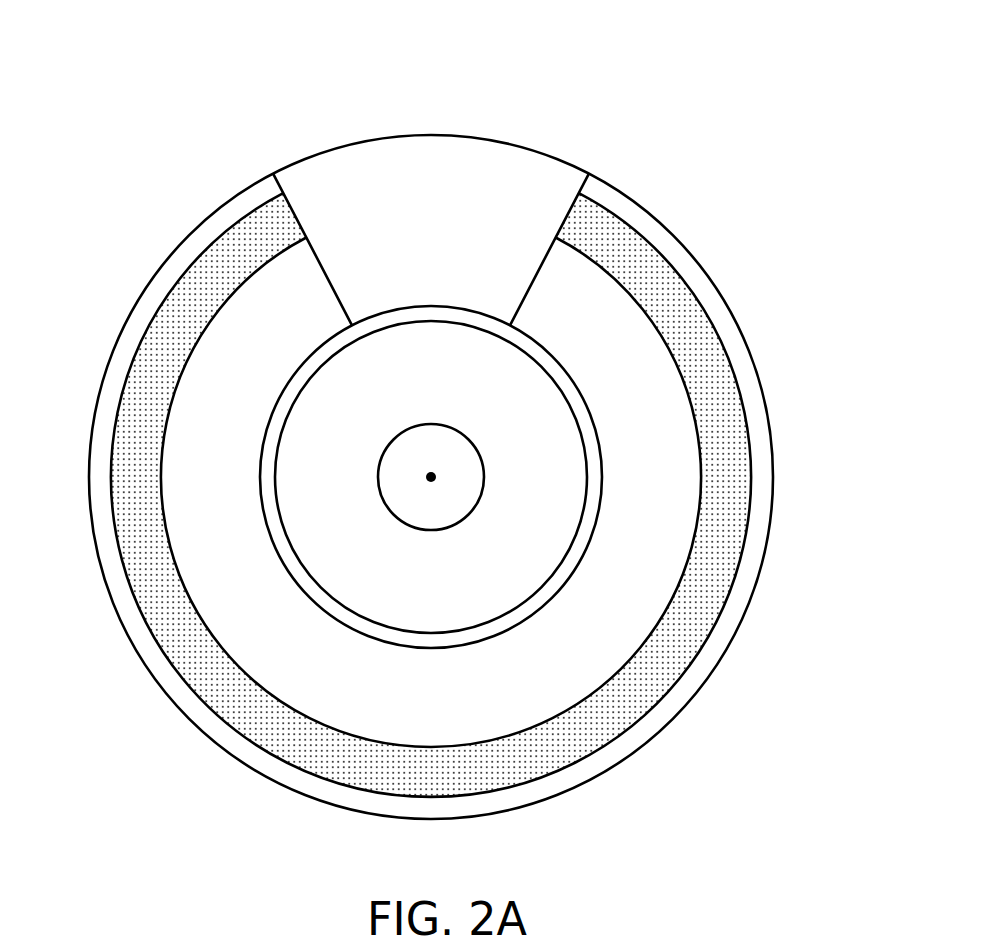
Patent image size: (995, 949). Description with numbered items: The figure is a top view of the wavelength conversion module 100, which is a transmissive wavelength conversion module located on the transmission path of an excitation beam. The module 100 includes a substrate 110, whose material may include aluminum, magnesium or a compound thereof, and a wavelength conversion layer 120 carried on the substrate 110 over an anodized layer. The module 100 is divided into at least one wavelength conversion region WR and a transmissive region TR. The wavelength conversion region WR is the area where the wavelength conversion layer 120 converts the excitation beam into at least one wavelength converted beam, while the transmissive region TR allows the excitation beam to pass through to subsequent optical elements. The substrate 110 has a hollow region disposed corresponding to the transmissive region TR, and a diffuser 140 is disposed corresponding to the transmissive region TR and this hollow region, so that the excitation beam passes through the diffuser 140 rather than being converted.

The wavelength conversion module 100 is at (469, 476).
The substrate 110 is at (248, 749).
The wavelength conversion layer 120 is at (725, 412).
The diffuser 140 is at (520, 158).
The transmissive region TR is at (446, 88).
The wavelength conversion region WR is at (723, 718).